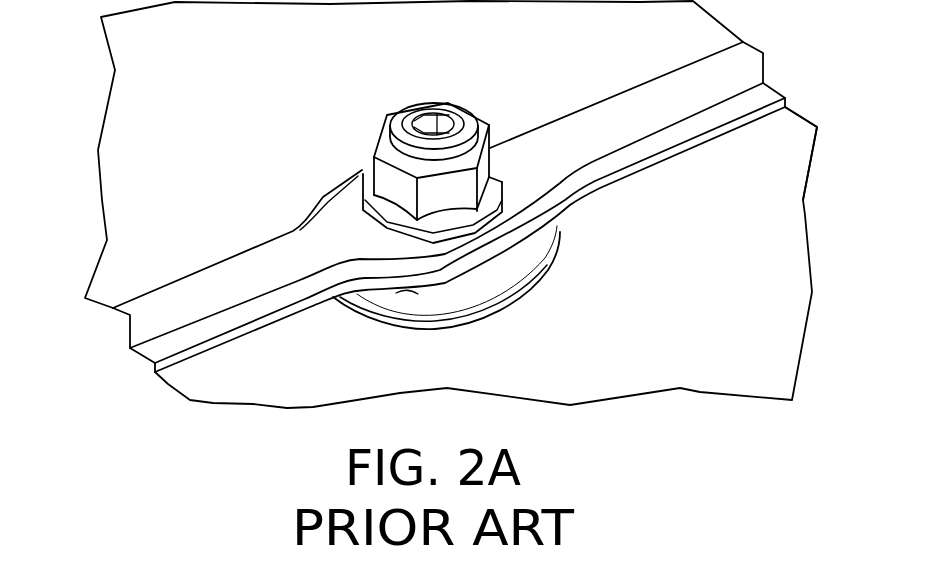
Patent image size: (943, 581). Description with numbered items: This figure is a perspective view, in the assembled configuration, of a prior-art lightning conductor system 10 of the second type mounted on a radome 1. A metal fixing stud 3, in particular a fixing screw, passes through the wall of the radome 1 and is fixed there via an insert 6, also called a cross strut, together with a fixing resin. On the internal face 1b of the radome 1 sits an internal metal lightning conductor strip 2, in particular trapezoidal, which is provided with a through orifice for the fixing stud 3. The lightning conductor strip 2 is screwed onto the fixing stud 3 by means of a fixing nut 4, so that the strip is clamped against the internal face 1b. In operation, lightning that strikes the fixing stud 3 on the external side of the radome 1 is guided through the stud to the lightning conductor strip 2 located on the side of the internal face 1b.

The lightning conductor system 10 is at (100, 83).
The radome 1 is at (724, 374).
The internal face 1b is at (800, 134).
The lightning conductor strip 2 is at (648, 100).
The fixing stud 3 is at (418, 110).
The fixing nut 4 is at (392, 183).
The insert 6 is at (500, 283).